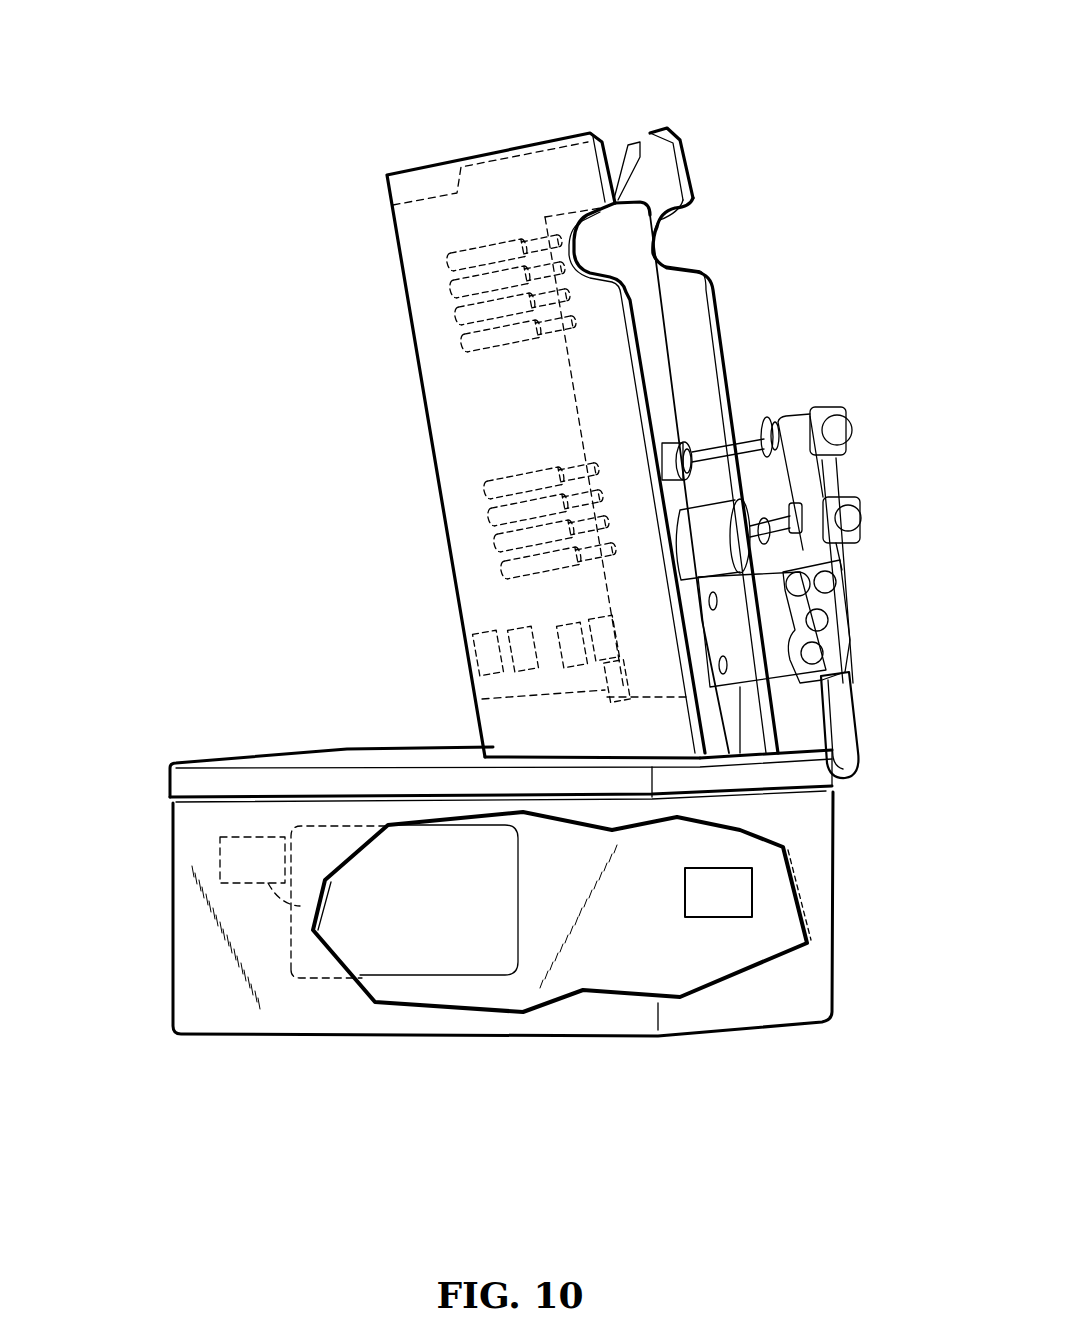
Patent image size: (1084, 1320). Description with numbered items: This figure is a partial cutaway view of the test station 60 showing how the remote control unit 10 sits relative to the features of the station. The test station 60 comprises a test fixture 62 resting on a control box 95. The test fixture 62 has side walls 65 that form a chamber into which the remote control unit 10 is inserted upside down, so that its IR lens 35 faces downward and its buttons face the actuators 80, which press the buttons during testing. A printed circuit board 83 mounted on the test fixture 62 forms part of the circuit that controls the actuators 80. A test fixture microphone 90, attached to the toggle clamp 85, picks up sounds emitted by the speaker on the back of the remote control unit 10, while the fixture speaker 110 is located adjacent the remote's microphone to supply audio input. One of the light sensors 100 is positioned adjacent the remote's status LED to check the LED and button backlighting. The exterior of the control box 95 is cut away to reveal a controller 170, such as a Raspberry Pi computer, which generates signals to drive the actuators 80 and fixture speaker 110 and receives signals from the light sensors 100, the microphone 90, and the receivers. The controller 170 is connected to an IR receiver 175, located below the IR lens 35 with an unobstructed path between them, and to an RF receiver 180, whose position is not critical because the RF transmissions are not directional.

The test station 60 is at (402, 145).
The test fixture 62 is at (593, 147).
The side walls 65 is at (667, 162).
The remote control unit 10 is at (628, 222).
The printed circuit board 83 is at (417, 242).
The actuators 80 is at (537, 513).
The test fixture microphone 90 is at (747, 497).
The fixture speaker 110 is at (590, 640).
The light sensor 100 is at (605, 693).
The toggle clamp 85 is at (840, 717).
The IR lens 35 is at (706, 688).
The control box 95 is at (783, 883).
The controller 170 is at (447, 912).
The RF receiver 180 is at (250, 862).
The IR receiver 175 is at (722, 892).